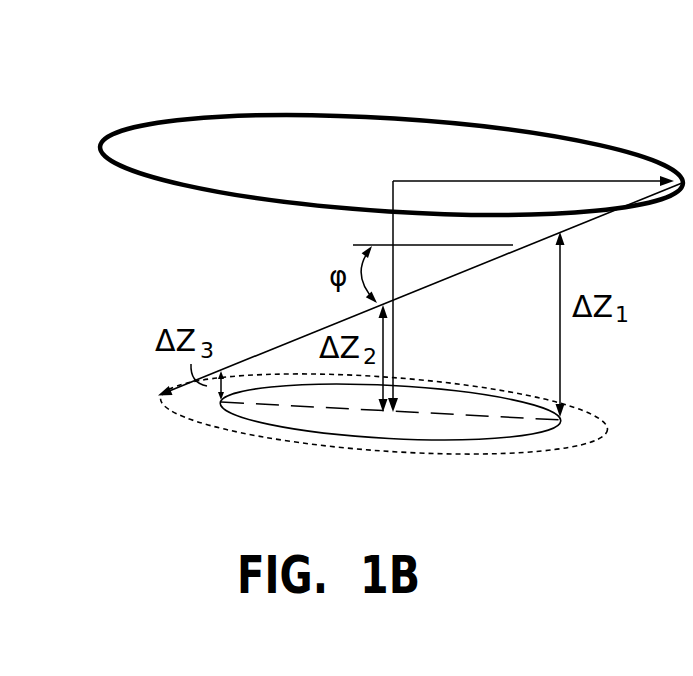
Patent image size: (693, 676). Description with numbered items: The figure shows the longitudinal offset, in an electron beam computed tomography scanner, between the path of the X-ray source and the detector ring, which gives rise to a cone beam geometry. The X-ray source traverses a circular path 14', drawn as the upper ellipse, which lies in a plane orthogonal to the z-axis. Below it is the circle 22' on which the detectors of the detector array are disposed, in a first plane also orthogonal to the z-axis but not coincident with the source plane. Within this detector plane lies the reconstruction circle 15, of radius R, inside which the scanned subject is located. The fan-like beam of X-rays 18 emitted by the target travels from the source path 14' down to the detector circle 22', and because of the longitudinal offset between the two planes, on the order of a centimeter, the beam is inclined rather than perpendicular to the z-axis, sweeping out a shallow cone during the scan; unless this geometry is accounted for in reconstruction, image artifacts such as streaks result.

The circular path 14' is at (373, 149).
The fan-like beam of X-rays 18 is at (303, 335).
The reconstruction circle 15 is at (581, 420).
The circle upon which detectors are disposed 22' is at (384, 429).